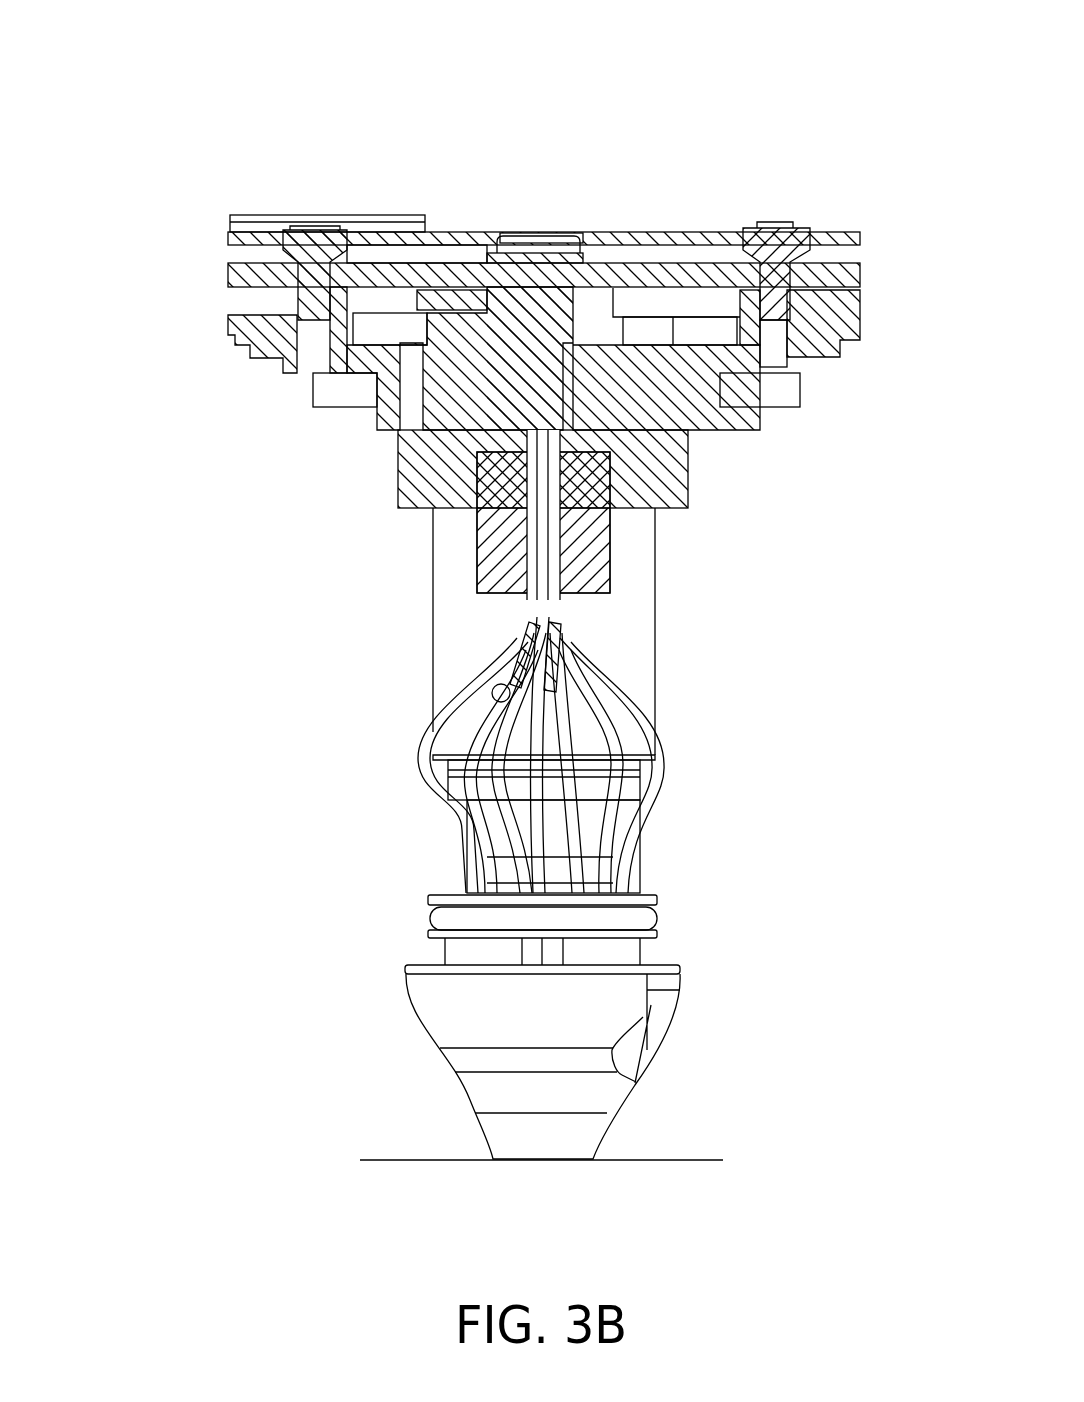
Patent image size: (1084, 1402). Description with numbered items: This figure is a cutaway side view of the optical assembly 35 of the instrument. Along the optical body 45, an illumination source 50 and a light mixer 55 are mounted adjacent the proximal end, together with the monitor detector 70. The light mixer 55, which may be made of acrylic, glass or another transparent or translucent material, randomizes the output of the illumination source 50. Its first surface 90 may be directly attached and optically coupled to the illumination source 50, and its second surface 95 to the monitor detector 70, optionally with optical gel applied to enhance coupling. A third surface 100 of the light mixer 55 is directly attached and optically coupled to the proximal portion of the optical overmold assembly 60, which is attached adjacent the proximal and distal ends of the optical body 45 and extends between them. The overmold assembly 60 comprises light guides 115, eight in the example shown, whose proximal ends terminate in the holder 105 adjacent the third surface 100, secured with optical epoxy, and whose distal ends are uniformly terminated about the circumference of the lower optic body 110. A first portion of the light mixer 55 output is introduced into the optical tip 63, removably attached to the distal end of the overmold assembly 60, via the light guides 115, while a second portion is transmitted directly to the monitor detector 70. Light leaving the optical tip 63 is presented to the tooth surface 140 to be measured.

The optical assembly 35 is at (165, 168).
The monitor detector 70 is at (410, 243).
The second surface 95 is at (466, 313).
The illumination source 50 is at (523, 240).
The first surface 90 is at (558, 292).
The light mixer 55 is at (465, 395).
The third surface 100 is at (573, 430).
The holder 105 is at (593, 567).
The optical body 45 is at (617, 670).
The optical overmold assembly 60 is at (660, 762).
The light guides 115 is at (606, 830).
The lower optic body 110 is at (627, 950).
The optical tip 63 is at (598, 1100).
The tooth surface 140 is at (390, 1148).